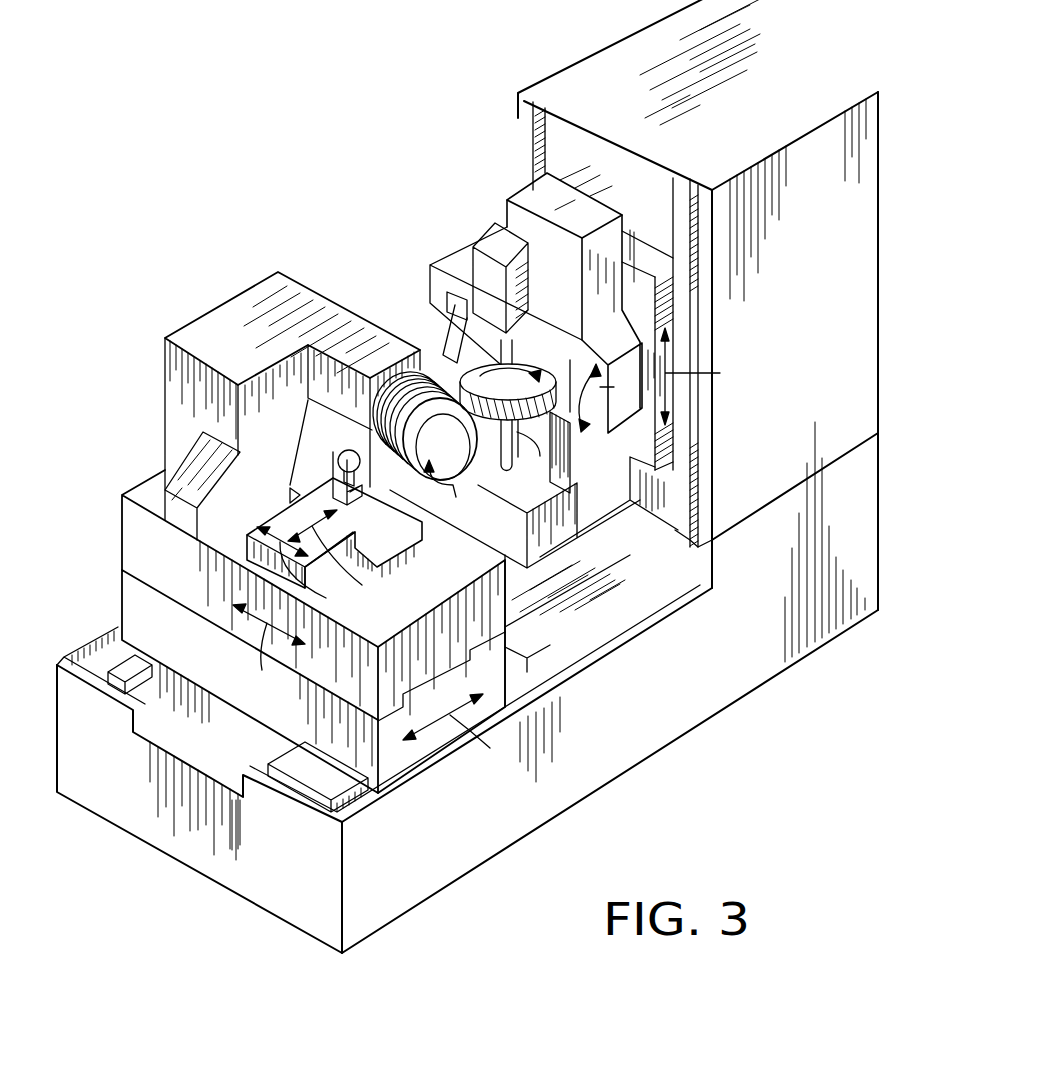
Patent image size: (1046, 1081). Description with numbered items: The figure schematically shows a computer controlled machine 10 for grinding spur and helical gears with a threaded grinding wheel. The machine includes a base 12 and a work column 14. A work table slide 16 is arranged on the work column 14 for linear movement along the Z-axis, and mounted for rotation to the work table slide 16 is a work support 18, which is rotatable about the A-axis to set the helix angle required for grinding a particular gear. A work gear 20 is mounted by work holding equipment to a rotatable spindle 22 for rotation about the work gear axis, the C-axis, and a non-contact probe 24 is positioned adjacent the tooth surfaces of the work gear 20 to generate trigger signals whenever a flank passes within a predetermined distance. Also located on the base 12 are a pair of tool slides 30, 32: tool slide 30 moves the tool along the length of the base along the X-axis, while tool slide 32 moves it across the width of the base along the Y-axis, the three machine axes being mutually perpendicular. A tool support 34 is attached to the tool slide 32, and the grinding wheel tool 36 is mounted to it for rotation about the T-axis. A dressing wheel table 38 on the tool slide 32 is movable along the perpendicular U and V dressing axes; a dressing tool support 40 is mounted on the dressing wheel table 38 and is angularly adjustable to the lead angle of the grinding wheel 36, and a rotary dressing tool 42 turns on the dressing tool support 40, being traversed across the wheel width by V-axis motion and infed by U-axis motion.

The computer controlled machine 10 is at (488, 70).
The base 12 is at (666, 708).
The work column 14 is at (848, 233).
The work table slide 16 is at (640, 442).
The work support 18 is at (533, 197).
The work gear 20 is at (480, 362).
The spindle 22 is at (498, 470).
The non-contact probe 24 is at (456, 306).
The tool slide 30 is at (135, 605).
The tool slide 32 is at (135, 540).
The tool support 34 is at (210, 320).
The tool 36 is at (410, 388).
The dressing wheel table 38 is at (283, 520).
The dressing tool support 40 is at (330, 478).
The rotary dressing tool 42 is at (352, 450).